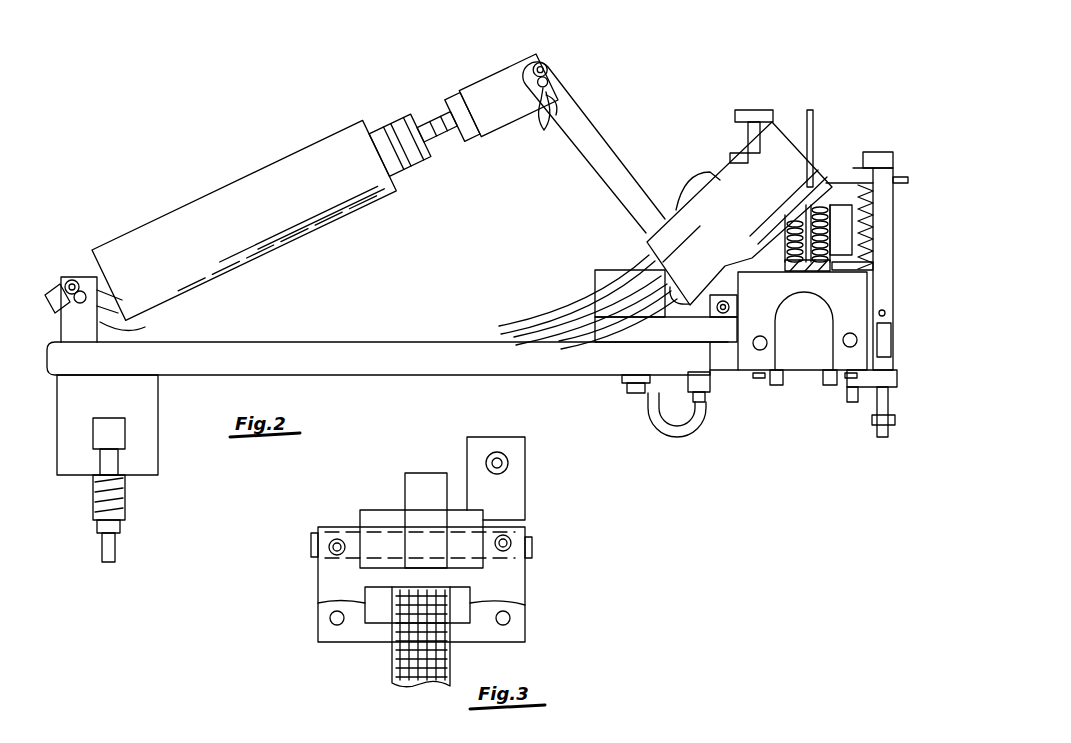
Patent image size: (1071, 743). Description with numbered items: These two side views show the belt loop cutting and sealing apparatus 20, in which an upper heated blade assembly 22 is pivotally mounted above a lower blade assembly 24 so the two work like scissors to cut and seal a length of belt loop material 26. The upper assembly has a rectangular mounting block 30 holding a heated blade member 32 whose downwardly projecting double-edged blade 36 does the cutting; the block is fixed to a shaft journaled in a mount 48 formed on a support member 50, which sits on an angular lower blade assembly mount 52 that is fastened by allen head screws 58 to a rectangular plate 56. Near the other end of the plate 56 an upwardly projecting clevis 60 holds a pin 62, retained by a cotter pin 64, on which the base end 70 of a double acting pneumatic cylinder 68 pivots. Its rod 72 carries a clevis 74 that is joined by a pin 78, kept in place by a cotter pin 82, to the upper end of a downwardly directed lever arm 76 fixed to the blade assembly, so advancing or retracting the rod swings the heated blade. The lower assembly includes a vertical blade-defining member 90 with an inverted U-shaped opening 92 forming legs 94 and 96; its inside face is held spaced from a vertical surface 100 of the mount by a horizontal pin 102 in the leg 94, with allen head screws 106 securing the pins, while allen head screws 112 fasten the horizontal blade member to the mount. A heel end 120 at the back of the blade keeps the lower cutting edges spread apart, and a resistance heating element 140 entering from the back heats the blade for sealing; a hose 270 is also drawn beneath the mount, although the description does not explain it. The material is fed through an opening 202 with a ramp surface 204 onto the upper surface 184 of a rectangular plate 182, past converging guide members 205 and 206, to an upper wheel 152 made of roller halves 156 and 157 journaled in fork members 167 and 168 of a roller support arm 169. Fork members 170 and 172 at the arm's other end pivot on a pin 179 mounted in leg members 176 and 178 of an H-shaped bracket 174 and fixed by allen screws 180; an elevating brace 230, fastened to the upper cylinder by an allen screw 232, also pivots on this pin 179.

In FIG. 2, the belt loop cutting and sealing apparatus 20 is at (137, 153).
In FIG. 2, the upper heated blade assembly 22 is at (646, 242).
In FIG. 2, the lower blade assembly 24 is at (871, 290).
In FIG. 2, the belt loop material 26 is at (819, 267).
In FIG. 3, the belt loop material 26 is at (390, 665).
In FIG. 2, the mounting block 30 is at (791, 131).
In FIG. 2, the heated blade member 32 is at (818, 172).
In FIG. 2, the double-edged blade 36 is at (838, 200).
In FIG. 2, the mount 48 is at (722, 290).
In FIG. 2, the support member 50 is at (598, 272).
In FIG. 2, the lower blade assembly mount 52 is at (581, 339).
In FIG. 2, the rectangular plate 56 is at (410, 377).
In FIG. 2, the allen head screws 58 is at (633, 393).
In FIG. 2, the clevis 60 is at (58, 275).
In FIG. 2, the pin 62 is at (63, 299).
In FIG. 2, the cotter pin 64 is at (83, 300).
In FIG. 2, the double acting pneumatic cylinder 68 is at (258, 163).
In FIG. 2, the base end 70 is at (95, 277).
In FIG. 2, the rod 72 is at (432, 120).
In FIG. 2, the clevis 74 is at (503, 70).
In FIG. 2, the lever arm 76 is at (609, 136).
In FIG. 2, the pin 78 is at (548, 68).
In FIG. 2, the cotter pin 82 is at (545, 112).
In FIG. 2, the blade-defining member 90 is at (858, 306).
In FIG. 2, the inverted U-shaped opening 92 is at (780, 343).
In FIG. 2, the leg 94 is at (745, 362).
In FIG. 2, the leg 96 is at (890, 382).
In FIG. 2, the vertical surface 100 is at (790, 331).
In FIG. 2, the horizontal pin 102 is at (751, 342).
In FIG. 2, the allen head screws 106 is at (759, 380).
In FIG. 2, the allen head screws 112 is at (783, 378).
In FIG. 2, the heel end 120 is at (748, 284).
In FIG. 2, the resistance heating element 140 is at (612, 322).
In FIG. 2, the upper wheel 152 is at (860, 257).
In FIG. 2, the roller half 156 is at (787, 240).
In FIG. 2, the roller half 157 is at (862, 235).
In FIG. 2, the fork member 167 is at (742, 246).
In FIG. 2, the fork member 168 is at (860, 212).
In FIG. 2, the roller support arm 169 is at (868, 161).
In FIG. 2, the guide member 205 is at (783, 265).
In FIG. 2, the guide member 206 is at (855, 268).
In FIG. 2, the air hose 270 is at (651, 426).
In FIG. 3, the fork member 170 is at (378, 510).
In FIG. 3, the fork member 172 is at (458, 510).
In FIG. 3, the H-shaped bracket 174 is at (318, 590).
In FIG. 3, the leg member 176 is at (318, 533).
In FIG. 3, the leg member 178 is at (528, 535).
In FIG. 3, the pin 179 is at (318, 538).
In FIG. 3, the allen screws 180 is at (333, 540).
In FIG. 3, the rectangular plate 182 is at (318, 628).
In FIG. 3, the upper surface 184 is at (366, 602).
In FIG. 3, the opening 202 is at (525, 603).
In FIG. 3, the ramp surface 204 is at (318, 607).
In FIG. 3, the elevating brace 230 is at (527, 495).
In FIG. 3, the allen screw 232 is at (508, 463).